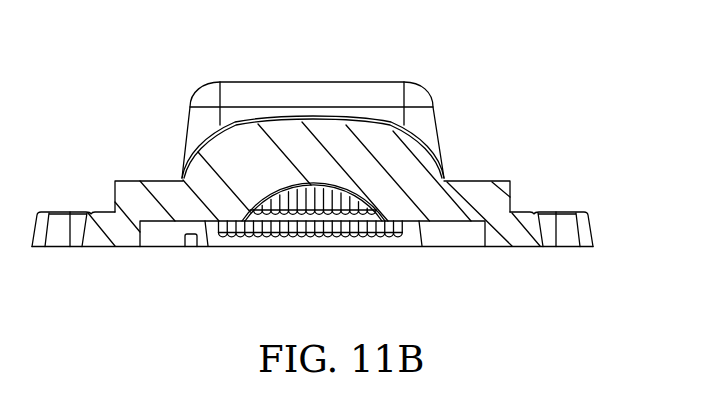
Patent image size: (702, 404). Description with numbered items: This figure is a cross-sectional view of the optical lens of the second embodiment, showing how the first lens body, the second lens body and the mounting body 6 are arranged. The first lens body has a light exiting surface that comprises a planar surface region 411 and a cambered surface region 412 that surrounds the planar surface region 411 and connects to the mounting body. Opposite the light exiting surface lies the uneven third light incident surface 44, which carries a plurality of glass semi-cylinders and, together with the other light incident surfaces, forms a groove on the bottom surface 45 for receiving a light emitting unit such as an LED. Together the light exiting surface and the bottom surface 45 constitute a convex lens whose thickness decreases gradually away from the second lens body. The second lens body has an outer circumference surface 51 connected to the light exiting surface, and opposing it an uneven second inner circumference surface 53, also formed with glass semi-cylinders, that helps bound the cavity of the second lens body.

The mounting body 6 is at (521, 180).
The outer circumference surface 51 is at (322, 82).
The planar surface region 411 is at (312, 121).
The cambered surface region 412 is at (207, 135).
The third light incident surface 44 is at (310, 203).
The second inner circumference surface 53 is at (372, 232).
The bottom surface 45 is at (458, 222).